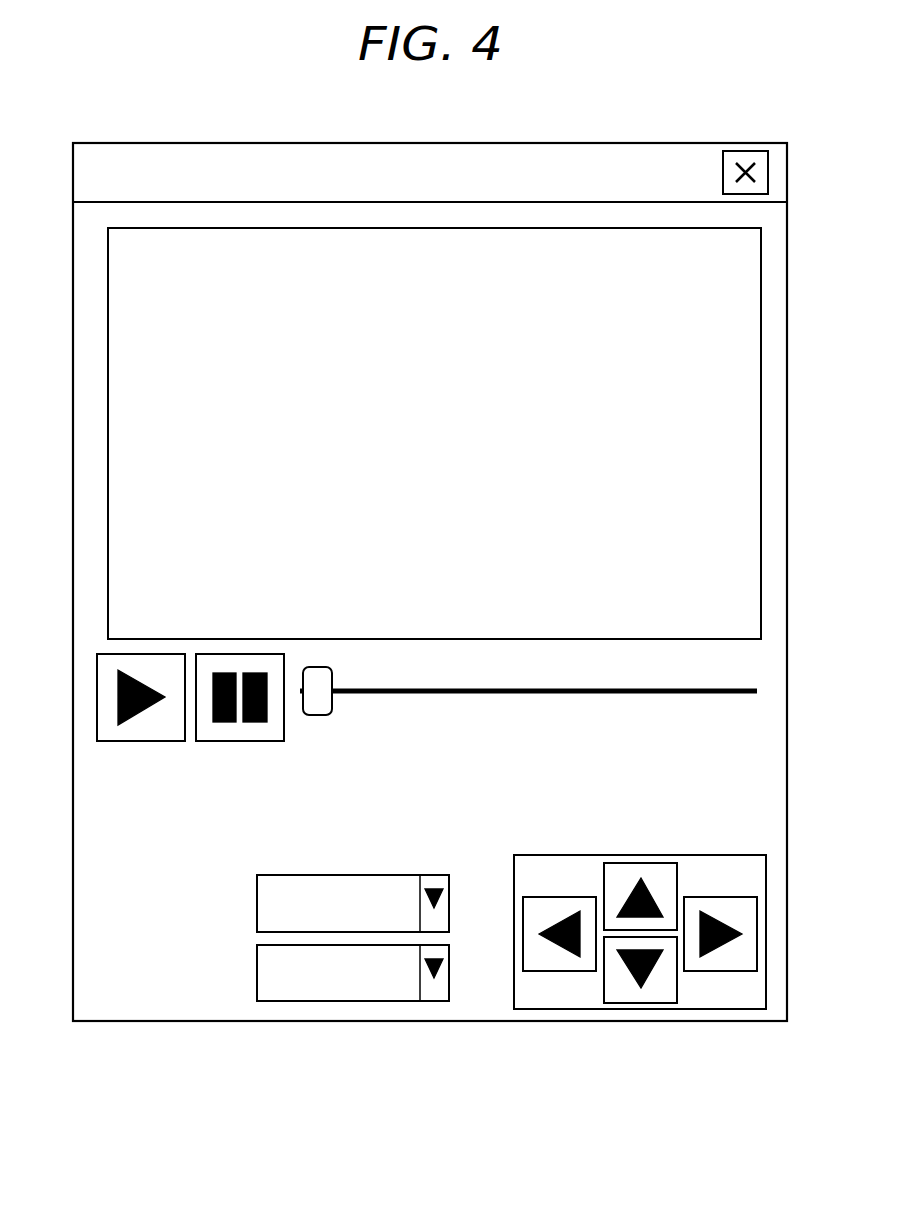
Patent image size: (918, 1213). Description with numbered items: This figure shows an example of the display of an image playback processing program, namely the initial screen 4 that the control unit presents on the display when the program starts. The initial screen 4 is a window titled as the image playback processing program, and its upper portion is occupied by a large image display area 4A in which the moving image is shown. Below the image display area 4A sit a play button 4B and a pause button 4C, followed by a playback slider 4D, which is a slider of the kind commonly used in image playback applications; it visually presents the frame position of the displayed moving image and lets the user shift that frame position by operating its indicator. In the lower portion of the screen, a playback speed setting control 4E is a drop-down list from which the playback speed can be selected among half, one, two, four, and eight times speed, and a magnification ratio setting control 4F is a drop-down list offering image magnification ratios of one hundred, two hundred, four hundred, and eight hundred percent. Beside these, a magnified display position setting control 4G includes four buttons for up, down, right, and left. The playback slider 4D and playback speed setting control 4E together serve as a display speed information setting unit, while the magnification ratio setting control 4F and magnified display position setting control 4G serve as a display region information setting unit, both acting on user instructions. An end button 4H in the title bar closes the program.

The initial screen 4 is at (699, 122).
The image display area 4A is at (748, 536).
The play button 4B is at (110, 690).
The pause button 4C is at (236, 742).
The playback slider 4D is at (677, 694).
The playback speed setting control 4E is at (398, 880).
The magnification ratio setting control 4F is at (389, 1001).
The magnified display position setting control 4G is at (750, 876).
The end button 4H is at (762, 172).